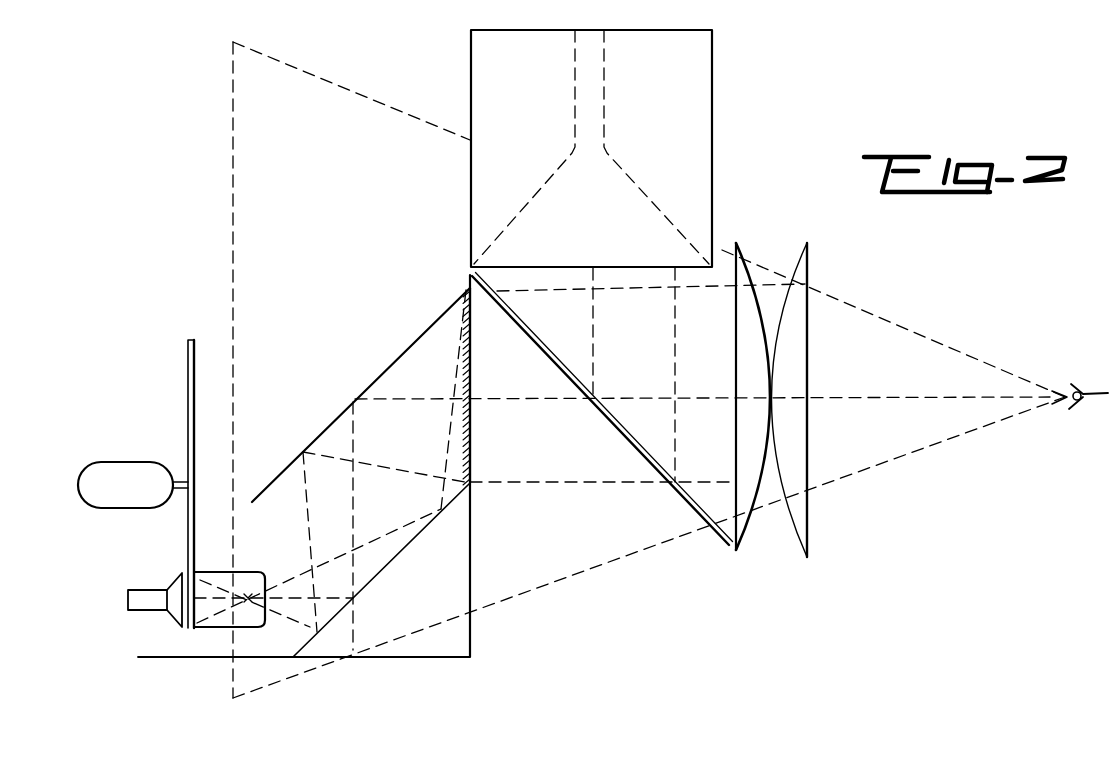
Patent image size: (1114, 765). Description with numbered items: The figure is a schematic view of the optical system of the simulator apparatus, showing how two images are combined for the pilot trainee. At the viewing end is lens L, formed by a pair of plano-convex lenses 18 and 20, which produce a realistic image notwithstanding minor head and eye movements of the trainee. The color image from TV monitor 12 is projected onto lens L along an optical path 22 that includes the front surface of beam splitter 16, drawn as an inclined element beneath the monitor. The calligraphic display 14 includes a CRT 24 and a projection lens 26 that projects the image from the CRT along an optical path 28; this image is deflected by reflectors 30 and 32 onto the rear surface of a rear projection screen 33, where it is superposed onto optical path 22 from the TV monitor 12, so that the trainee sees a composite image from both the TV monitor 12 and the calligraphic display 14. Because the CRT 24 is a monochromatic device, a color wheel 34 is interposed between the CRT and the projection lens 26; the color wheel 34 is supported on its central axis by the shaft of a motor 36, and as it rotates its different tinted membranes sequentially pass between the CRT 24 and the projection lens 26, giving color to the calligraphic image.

The TV monitor 12 is at (713, 87).
The calligraphic display 14 is at (477, 545).
The beam splitter 16 is at (631, 450).
The plano-convex lens 18 is at (808, 431).
The plano-convex lens 20 is at (735, 436).
The optical path 22 is at (497, 285).
The CRT 24 is at (153, 590).
The projection lens 26 is at (243, 576).
The optical path 28 is at (424, 518).
The reflector 30 is at (372, 574).
The reflector 32 is at (375, 383).
The rear projection screen 33 is at (472, 434).
The color wheel 34 is at (188, 379).
The motor 36 is at (147, 497).
The lens L is at (778, 400).